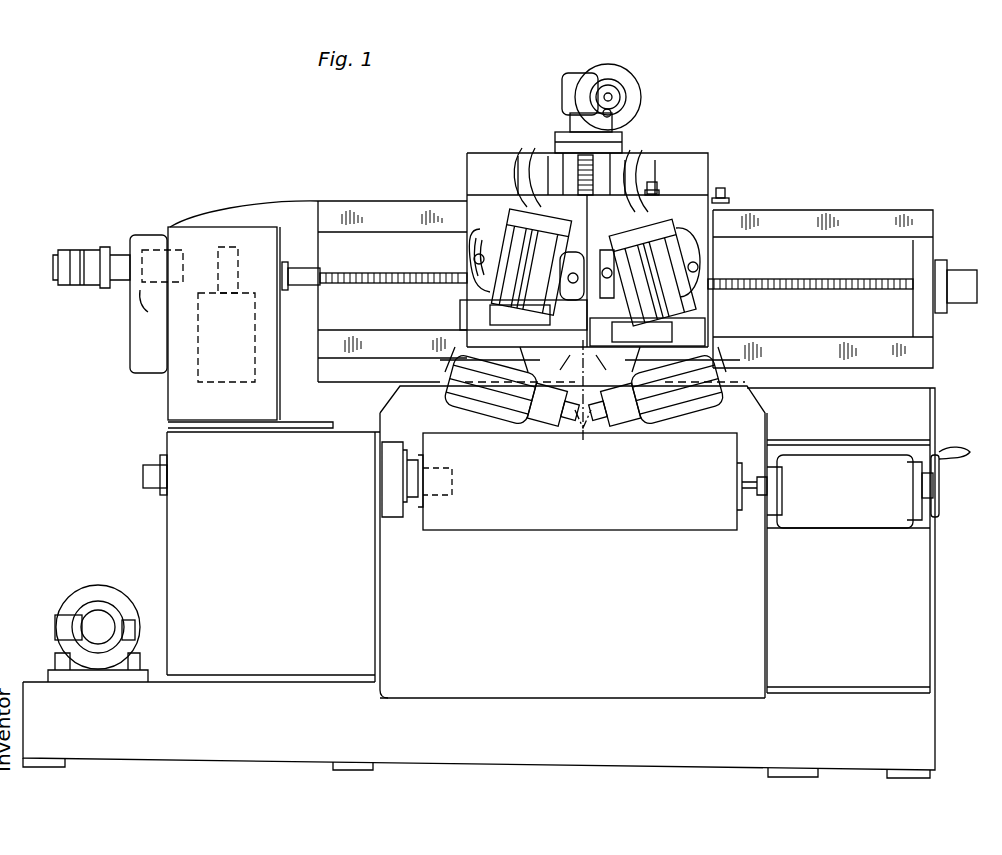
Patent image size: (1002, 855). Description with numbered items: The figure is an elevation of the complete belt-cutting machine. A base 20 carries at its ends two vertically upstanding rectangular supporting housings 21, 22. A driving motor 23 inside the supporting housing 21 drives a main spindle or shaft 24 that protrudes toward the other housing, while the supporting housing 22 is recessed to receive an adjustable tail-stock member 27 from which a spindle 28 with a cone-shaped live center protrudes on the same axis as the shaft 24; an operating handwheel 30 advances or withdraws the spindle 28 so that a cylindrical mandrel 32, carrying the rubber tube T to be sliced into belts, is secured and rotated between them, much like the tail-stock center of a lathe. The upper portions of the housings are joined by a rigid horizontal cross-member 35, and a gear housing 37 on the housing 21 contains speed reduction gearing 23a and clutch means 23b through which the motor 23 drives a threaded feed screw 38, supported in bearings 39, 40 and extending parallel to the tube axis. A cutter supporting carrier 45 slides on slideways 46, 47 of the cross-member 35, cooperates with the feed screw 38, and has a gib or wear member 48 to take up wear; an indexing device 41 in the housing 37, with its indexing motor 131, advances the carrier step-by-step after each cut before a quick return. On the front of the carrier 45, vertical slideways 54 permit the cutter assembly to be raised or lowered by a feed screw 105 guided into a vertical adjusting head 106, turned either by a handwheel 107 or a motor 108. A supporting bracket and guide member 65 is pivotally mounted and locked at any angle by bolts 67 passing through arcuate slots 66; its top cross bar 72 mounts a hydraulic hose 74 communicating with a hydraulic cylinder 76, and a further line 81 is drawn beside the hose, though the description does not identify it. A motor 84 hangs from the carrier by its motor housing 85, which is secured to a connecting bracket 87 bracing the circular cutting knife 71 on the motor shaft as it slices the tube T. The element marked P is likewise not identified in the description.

The base 20 is at (905, 730).
The supporting housing 21 is at (185, 545).
The supporting housing 22 is at (912, 600).
The driving motor 23 is at (153, 451).
The speed reduction gearing 23a is at (198, 373).
The clutch means 23b is at (238, 244).
The main spindle or shaft 24 is at (440, 498).
The adjustable tail-stock member 27 is at (875, 455).
The spindle 28 is at (750, 497).
The operating handwheel 30 is at (945, 460).
The cylindrical mandrel 32 is at (749, 464).
The cross-member 35 is at (381, 192).
The gear housing 37 is at (200, 225).
The threaded feed screw 38 is at (360, 273).
The bearing 39 is at (285, 291).
The bearing 40 is at (962, 303).
The indexing device 41 is at (140, 240).
The cutter supporting carrier 45 is at (744, 149).
The slideway 46 is at (872, 210).
The slideway 47 is at (837, 346).
The gib or wear member 48 is at (736, 196).
The vertical slideways 54 is at (540, 176).
The supporting bracket and guide member 65 is at (681, 234).
The arcuate slots 66 is at (472, 245).
The bolts 67 is at (474, 262).
The circular cutting knife 71 is at (578, 430).
The top cross bar 72 is at (542, 232).
The hydraulic hose 74 is at (537, 148).
The hydraulic cylinder 76 is at (508, 234).
The cables 81 is at (520, 148).
The motor 84 is at (452, 402).
The motor housing 85 is at (486, 425).
The connecting bracket 87 is at (574, 362).
The feed screw 105 is at (592, 196).
The vertical adjusting head 106 is at (562, 92).
The handwheel 107 is at (625, 88).
The motor 108 is at (641, 100).
The indexing motor 131 is at (160, 282).
The pump P is at (75, 595).
The rubber tube T is at (500, 530).